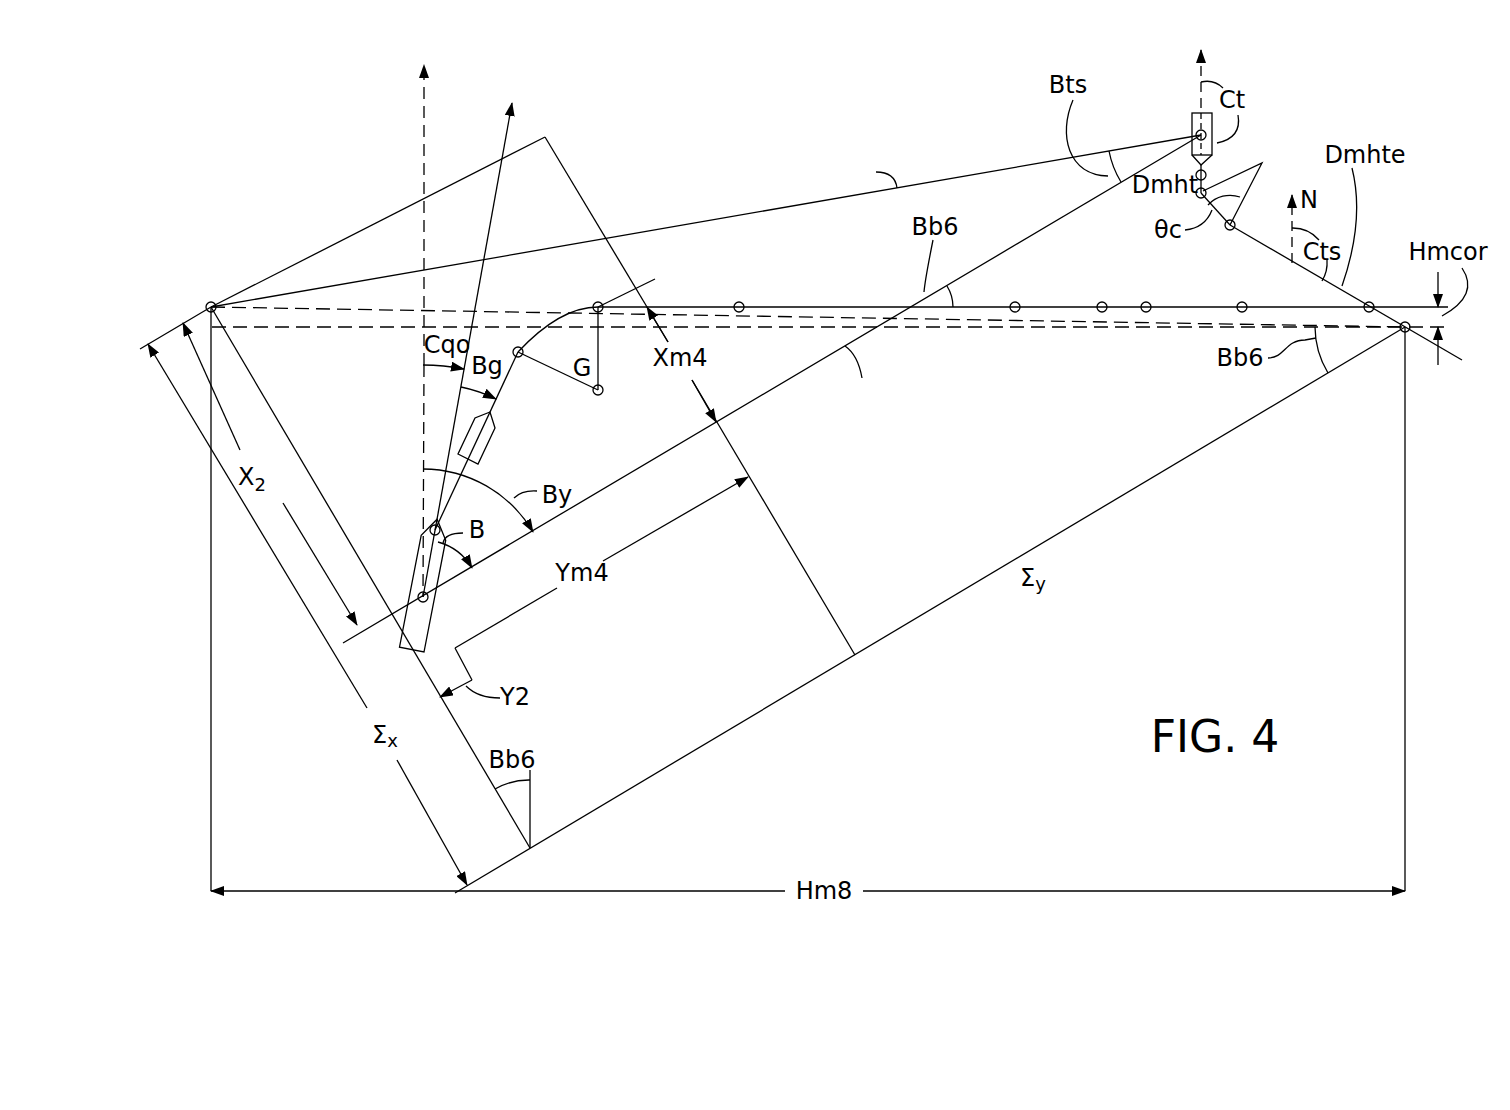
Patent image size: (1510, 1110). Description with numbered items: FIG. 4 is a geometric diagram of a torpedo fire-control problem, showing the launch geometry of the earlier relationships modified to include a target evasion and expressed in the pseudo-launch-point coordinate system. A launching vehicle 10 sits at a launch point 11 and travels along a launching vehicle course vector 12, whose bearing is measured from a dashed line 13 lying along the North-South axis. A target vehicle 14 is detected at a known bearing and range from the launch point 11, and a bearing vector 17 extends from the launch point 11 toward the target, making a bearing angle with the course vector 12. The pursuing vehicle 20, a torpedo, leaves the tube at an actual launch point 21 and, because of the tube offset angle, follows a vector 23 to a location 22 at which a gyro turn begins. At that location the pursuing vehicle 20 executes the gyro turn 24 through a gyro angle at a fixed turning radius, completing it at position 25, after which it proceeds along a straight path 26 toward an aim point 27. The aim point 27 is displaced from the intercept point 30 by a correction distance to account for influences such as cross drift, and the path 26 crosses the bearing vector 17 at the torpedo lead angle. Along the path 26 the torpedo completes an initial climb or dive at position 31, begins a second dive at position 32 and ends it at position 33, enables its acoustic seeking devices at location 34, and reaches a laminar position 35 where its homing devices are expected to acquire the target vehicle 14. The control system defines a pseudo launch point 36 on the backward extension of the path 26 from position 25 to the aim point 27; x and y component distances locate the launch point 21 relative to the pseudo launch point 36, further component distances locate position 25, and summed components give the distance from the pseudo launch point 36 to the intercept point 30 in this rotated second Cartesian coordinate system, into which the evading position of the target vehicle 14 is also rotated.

The launching vehicle 10 is at (437, 598).
The launch point 11 is at (415, 593).
The launching vehicle course vector 12 is at (498, 177).
The dashed line 13 is at (425, 130).
The target vehicle 14 is at (1192, 130).
The bearing vector 17 is at (772, 393).
The pursuing vehicle 20 is at (492, 432).
The actual launch point 21 is at (423, 527).
The location at which a gyro turn begins 22 is at (518, 347).
The vector 23 is at (433, 492).
The gyro turn 24 is at (563, 307).
The position at which the gyro turn completes 25 is at (600, 302).
The path 26 is at (840, 307).
The aim point 27 is at (1369, 302).
The intercept point 30 is at (1410, 332).
The position of completion of initial climb or dive 31 is at (740, 303).
The position at which second dive begins 32 is at (1018, 303).
The position at which second dive ends 33 is at (1102, 302).
The location of acoustic seeking device enablement 34 is at (1148, 302).
The laminar position 35 is at (1243, 302).
The pseudo launch point 36 is at (214, 300).